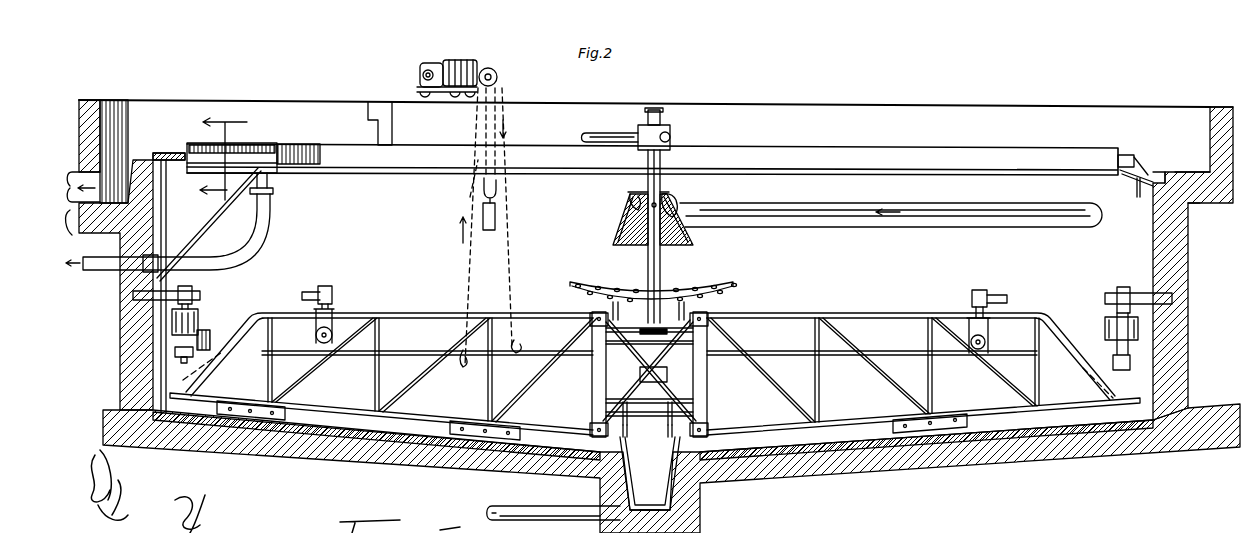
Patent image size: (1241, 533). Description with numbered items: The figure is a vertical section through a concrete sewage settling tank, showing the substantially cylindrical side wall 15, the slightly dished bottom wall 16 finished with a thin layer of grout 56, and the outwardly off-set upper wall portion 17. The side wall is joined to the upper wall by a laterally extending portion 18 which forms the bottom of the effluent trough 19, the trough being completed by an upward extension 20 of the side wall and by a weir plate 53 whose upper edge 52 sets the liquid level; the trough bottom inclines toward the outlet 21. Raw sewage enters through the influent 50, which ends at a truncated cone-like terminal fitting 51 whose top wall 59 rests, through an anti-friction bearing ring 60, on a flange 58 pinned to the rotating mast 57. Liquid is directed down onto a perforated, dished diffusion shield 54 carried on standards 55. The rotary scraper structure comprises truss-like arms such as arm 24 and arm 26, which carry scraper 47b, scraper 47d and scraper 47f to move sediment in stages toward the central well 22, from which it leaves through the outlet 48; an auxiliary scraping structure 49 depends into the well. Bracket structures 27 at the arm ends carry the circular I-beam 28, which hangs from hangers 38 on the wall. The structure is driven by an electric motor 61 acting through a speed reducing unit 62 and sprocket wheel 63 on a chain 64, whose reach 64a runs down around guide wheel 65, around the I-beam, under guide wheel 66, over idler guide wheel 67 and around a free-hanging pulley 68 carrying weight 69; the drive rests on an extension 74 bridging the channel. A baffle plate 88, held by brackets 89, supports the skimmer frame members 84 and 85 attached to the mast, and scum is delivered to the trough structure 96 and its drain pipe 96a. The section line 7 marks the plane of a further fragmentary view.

The side wall 15 is at (1176, 258).
The bottom wall 16 is at (781, 478).
The upper wall portion 17 is at (1217, 107).
The laterally extending portion 18 is at (1192, 203).
The effluent trough 19 is at (1190, 172).
The upward extension of the wall 20 is at (135, 186).
The outlet 21 is at (76, 226).
The central well 22 is at (668, 516).
The scraper arm 24 is at (405, 314).
The scraper arm 26 is at (868, 314).
The bracket structure 27 is at (187, 380).
The circular I-beam 28 is at (193, 352).
The hanger 38 is at (198, 304).
The scraper 47b is at (243, 405).
The scraper 47d is at (967, 409).
The scraper 47f is at (510, 430).
The outlet 48 is at (540, 506).
The auxiliary scraping structure 49 is at (632, 440).
The influent 50 is at (797, 222).
The terminal fitting 51 is at (620, 226).
The upper edge of weir plate 52 is at (1126, 156).
The weir plate 53 is at (1136, 156).
The diffusion shield 54 is at (720, 285).
The standards 55 is at (612, 307).
The layer of grout 56 is at (815, 430).
The mast 57 is at (661, 263).
The flange 58 is at (628, 205).
The top wall 59 is at (683, 194).
The anti-friction bearing ring 60 is at (628, 195).
The electric motor 61 is at (430, 64).
The speed reducing unit 62 is at (462, 60).
The sprocket wheel 63 is at (488, 67).
The chain 64 is at (500, 106).
The reach of the chain 64a is at (470, 197).
The guide wheel 65 is at (461, 369).
The guide wheel 66 is at (506, 359).
The idler guide wheel 67 is at (498, 76).
The free-hanging pulley 68 is at (482, 188).
The weight 69 is at (496, 218).
The section line 7- 7 is at (223, 155).
The extension of the wall part 74 is at (400, 108).
The radially extending member 84 is at (600, 133).
The radially extending member 85 is at (672, 135).
The baffle plate 88 is at (938, 147).
The brackets 89 is at (163, 173).
The trough structure 96 is at (277, 173).
The drain pipe 96a is at (268, 235).